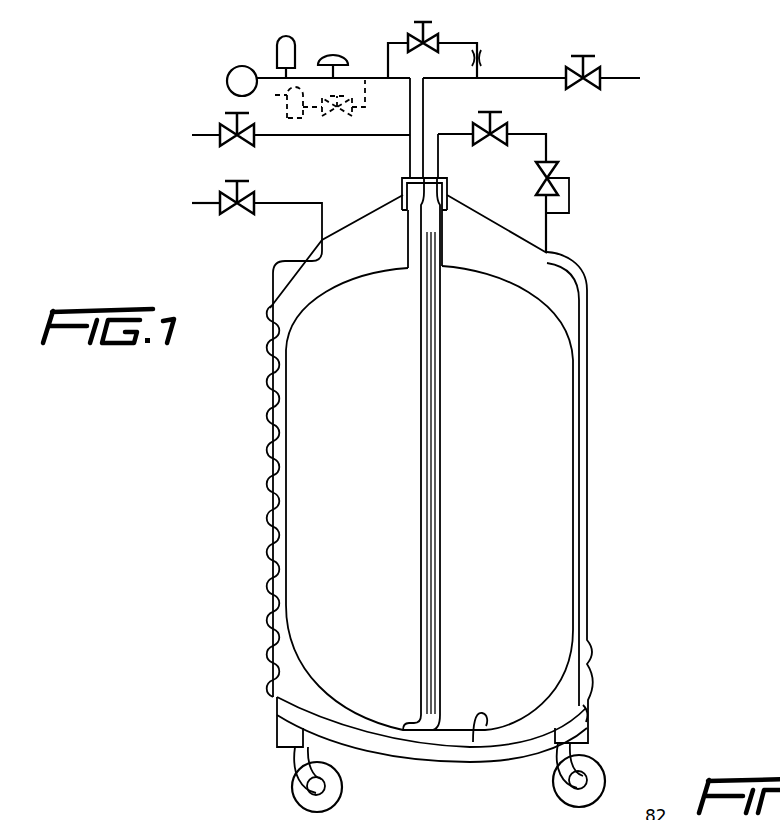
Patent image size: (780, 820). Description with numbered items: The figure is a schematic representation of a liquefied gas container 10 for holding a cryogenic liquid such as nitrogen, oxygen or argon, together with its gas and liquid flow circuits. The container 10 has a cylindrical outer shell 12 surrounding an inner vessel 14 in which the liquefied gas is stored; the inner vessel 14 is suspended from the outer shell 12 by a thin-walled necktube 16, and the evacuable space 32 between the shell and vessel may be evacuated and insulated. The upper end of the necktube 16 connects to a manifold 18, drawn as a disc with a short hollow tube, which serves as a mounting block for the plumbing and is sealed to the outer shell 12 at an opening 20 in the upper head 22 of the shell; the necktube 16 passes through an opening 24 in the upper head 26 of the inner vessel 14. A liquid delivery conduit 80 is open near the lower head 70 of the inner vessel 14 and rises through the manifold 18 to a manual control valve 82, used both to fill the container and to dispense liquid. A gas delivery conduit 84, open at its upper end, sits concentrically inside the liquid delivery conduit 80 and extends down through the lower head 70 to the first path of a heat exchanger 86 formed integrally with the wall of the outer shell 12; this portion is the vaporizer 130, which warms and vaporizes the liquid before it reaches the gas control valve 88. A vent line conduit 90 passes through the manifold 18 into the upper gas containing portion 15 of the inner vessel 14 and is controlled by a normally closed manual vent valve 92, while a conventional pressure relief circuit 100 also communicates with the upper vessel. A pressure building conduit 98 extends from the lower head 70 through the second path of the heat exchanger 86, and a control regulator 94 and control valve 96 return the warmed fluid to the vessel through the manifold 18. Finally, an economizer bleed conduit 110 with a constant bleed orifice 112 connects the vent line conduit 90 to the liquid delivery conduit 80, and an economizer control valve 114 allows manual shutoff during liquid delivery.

The liquefied gas container 10 is at (670, 289).
The outer shell 12 is at (590, 498).
The inner vessel 14 is at (567, 318).
The upper gas containing portion 15 is at (460, 282).
The necktube 16 is at (445, 232).
The manifold 18 is at (398, 190).
The opening 20 is at (458, 193).
The upper head 22 is at (360, 217).
The opening 24 is at (408, 272).
The upper head 26 is at (517, 285).
The evacuable space 32 is at (335, 262).
The lower head 70 is at (330, 710).
The liquid delivery conduit 80 is at (420, 453).
The manual control valve 82 is at (583, 56).
The gas delivery conduit 84 is at (437, 430).
The heat exchanger 86 is at (594, 658).
The gas control valve 88 is at (232, 180).
The vent line conduit 90 is at (405, 160).
The manual vent valve 92 is at (233, 112).
The control regulator 94 is at (570, 165).
The control valve 96 is at (492, 112).
The pressure building conduit 98 is at (586, 712).
The pressure relief circuit 100 is at (282, 34).
The bleed conduit 110 is at (390, 42).
The constant bleed orifice 112 is at (484, 60).
The economizer control valve 114 is at (427, 22).
The vaporizer 130 is at (268, 573).